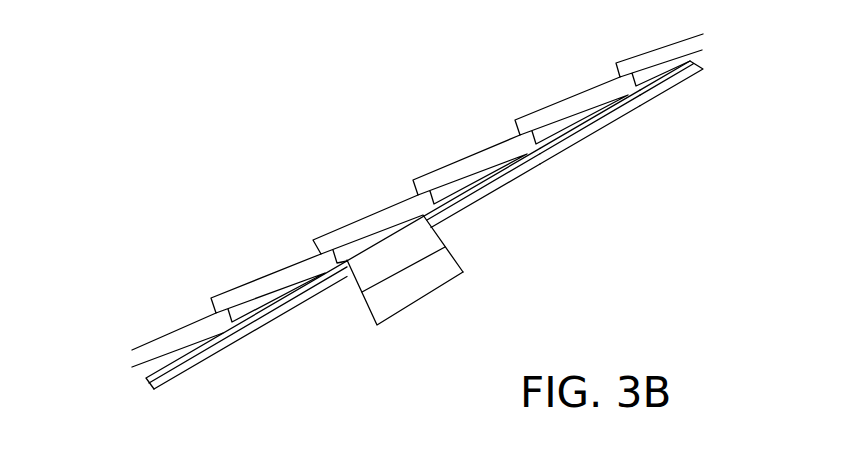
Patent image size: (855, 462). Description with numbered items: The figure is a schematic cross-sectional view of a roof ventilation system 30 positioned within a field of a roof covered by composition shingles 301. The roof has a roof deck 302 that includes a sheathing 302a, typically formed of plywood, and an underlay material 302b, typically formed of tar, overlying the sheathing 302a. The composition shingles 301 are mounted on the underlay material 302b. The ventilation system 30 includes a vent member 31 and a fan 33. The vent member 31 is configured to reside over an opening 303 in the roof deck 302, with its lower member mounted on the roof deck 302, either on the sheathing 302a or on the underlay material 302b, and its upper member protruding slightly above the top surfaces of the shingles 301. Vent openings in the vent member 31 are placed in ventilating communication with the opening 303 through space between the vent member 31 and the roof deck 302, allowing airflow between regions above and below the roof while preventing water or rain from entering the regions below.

The ventilation system 30 is at (355, 128).
The composition shingles 301 is at (655, 53).
The roof deck 302 is at (142, 392).
The sheathing 302a is at (574, 143).
The underlay material 302b is at (704, 58).
The vent member 31 is at (355, 229).
The fan 33 is at (425, 287).
The opening 303 is at (373, 263).